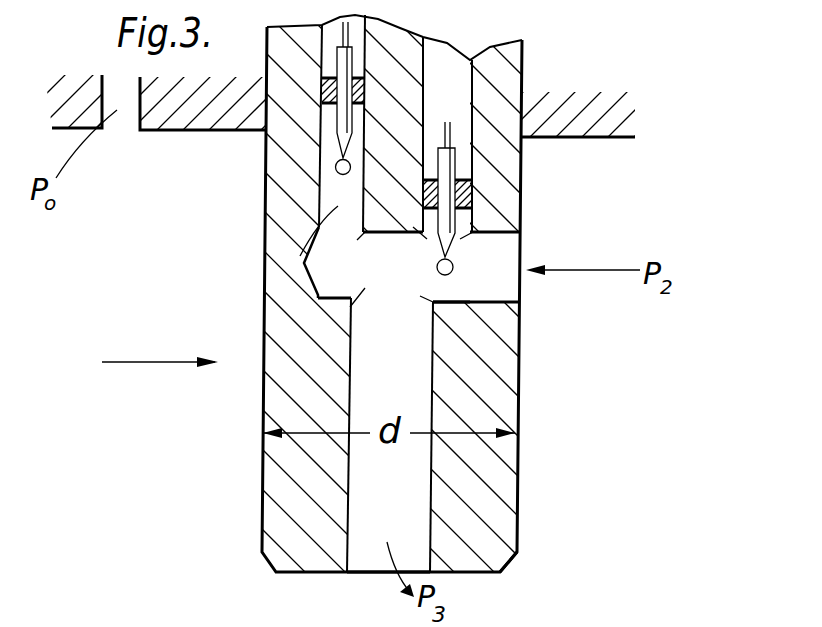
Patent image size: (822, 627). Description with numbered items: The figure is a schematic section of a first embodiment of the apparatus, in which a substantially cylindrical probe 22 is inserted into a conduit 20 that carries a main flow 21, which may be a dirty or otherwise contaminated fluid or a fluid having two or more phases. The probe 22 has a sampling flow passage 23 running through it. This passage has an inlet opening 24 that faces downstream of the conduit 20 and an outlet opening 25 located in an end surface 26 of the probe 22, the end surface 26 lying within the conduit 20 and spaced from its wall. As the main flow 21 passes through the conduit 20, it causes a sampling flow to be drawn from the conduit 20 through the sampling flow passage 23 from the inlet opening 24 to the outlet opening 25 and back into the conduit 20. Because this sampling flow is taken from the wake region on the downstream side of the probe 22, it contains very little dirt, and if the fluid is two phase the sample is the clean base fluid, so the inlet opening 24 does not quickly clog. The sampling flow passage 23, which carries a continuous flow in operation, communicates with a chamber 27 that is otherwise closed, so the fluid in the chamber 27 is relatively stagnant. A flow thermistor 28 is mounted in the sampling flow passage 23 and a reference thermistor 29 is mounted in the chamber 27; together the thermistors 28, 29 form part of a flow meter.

The conduit 20 is at (193, 133).
The main flow 21 is at (132, 360).
The probe 22 is at (505, 85).
The sampling flow passage 23 is at (470, 287).
The inlet opening 24 is at (505, 302).
The outlet opening 25 is at (370, 562).
The end surface 26 is at (483, 577).
The chamber 27 is at (323, 227).
The flow thermistor 28 is at (450, 222).
The reference thermistor 29 is at (338, 120).